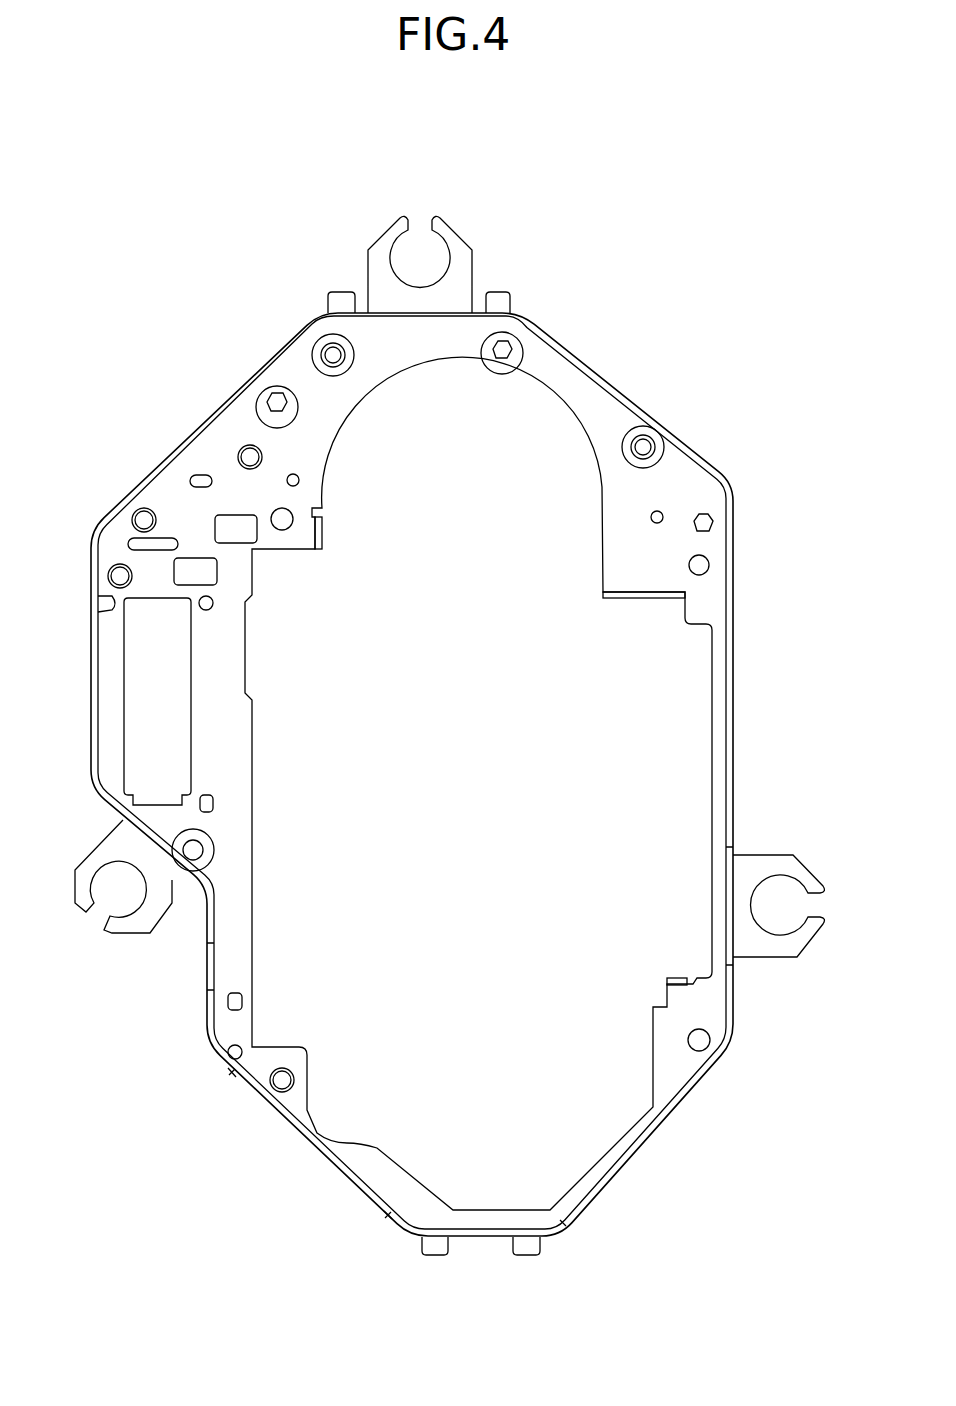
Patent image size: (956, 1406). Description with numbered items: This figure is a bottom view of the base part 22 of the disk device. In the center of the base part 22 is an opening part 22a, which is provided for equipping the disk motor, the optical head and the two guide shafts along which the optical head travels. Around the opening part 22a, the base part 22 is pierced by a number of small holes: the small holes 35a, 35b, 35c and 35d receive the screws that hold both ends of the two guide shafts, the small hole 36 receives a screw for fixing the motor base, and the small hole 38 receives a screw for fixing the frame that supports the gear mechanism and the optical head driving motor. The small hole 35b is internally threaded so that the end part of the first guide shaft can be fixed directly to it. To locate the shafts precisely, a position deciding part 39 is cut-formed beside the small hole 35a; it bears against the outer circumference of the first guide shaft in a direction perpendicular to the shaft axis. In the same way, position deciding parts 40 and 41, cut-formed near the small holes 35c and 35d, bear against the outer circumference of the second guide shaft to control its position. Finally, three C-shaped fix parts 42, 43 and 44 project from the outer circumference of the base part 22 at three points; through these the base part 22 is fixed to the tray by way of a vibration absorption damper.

The base part 22 is at (436, 158).
The opening part 22a is at (694, 752).
The small hole 35a is at (283, 528).
The small hole 35b is at (280, 1077).
The small hole 35c is at (705, 565).
The small hole 35d is at (702, 1048).
The small hole 36 is at (505, 350).
The small hole 38 is at (242, 448).
The position deciding part 39 is at (324, 533).
The position deciding part 40 is at (668, 600).
The position deciding part 41 is at (664, 988).
The fix part 42 is at (455, 240).
The fix part 43 is at (118, 932).
The fix part 44 is at (786, 887).